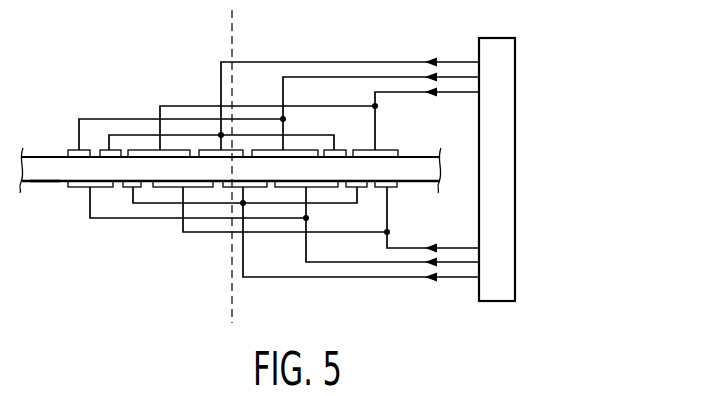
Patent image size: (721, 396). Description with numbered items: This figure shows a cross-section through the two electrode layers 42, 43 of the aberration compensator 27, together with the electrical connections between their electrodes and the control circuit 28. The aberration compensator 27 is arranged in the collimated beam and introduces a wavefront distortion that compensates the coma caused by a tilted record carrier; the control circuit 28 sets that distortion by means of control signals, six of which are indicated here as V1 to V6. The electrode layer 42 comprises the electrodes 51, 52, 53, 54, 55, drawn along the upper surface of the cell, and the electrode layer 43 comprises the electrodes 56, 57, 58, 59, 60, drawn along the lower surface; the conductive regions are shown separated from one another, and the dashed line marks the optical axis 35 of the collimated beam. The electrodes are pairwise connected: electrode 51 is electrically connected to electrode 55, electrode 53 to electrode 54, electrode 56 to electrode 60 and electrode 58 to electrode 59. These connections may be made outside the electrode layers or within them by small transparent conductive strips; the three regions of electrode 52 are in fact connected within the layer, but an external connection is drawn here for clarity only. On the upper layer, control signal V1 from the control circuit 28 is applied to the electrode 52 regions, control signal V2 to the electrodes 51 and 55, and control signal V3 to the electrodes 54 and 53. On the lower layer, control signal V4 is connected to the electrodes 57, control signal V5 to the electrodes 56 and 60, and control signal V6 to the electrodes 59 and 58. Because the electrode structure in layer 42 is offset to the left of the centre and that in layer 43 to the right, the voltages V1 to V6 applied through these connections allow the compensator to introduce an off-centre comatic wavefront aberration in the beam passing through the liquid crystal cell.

The aberration compensator 27 is at (69, 48).
The control circuit 28 is at (516, 243).
The optical axis 35 is at (233, 22).
The electrode layer 42 is at (47, 156).
The electrode layer 43 is at (47, 185).
The electrode 51 is at (71, 150).
The electrode 52 is at (102, 150).
The electrode 53 is at (395, 150).
The electrode 54 is at (140, 150).
The electrode 55 is at (262, 150).
The electrode 56 is at (72, 188).
The electrode 57 is at (126, 188).
The electrode 58 is at (398, 188).
The electrode 59 is at (162, 188).
The electrode 60 is at (283, 188).
The control signal V1 is at (350, 62).
The control signal V2 is at (380, 77).
The control signal V3 is at (408, 92).
The control signal V4 is at (352, 278).
The control signal V5 is at (378, 263).
The control signal V6 is at (408, 249).